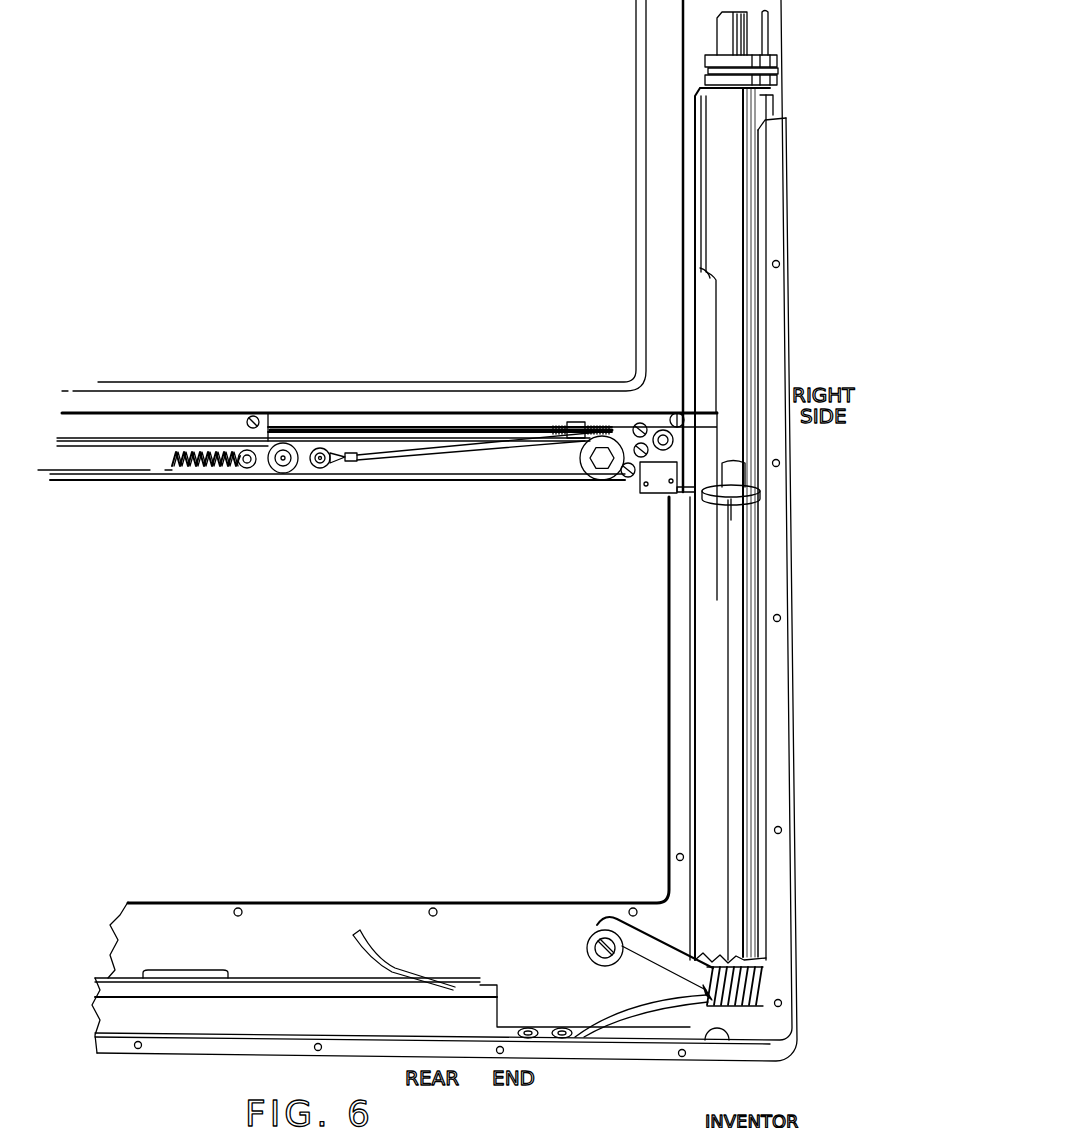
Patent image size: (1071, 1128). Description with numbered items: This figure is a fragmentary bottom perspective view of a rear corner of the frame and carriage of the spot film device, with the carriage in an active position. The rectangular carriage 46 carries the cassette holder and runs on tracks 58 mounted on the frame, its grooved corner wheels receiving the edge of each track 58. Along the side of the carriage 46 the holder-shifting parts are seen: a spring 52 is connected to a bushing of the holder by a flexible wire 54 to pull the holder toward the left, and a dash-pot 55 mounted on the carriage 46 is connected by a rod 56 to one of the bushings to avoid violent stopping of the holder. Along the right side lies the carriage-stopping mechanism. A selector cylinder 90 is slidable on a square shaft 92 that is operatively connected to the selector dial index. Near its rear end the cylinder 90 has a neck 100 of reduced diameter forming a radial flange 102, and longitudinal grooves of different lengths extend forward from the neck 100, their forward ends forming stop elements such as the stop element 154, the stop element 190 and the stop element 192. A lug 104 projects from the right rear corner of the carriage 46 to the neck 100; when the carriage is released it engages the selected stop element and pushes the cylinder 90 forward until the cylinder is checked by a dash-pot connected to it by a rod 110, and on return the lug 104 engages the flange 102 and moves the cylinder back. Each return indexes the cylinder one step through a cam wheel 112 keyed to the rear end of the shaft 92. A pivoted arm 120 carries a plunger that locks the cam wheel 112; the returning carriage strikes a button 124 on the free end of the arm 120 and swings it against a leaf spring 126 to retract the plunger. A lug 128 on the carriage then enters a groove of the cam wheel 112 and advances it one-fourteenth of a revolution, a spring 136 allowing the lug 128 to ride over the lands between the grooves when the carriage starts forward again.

The carriage 46 is at (658, 170).
The spring 52 is at (186, 472).
The flexible wire 54 is at (410, 456).
The dash-pot 55 is at (143, 430).
The rod 56 is at (322, 432).
The track 58 is at (692, 675).
The selector cylinder 90 is at (740, 222).
The square shaft 92 is at (727, 31).
The neck 100 is at (745, 484).
The radial flange 102 is at (745, 505).
The lug 104 is at (714, 410).
The rod 110 is at (765, 35).
The cam wheel 112 is at (758, 964).
The arm 120 is at (650, 957).
The button 124 is at (588, 941).
The leaf spring 126 is at (613, 1010).
The lug 128 is at (690, 500).
The spring 136 is at (650, 470).
The stop element 154 is at (758, 266).
The stop element 190 is at (723, 463).
The stop element 192 is at (708, 272).